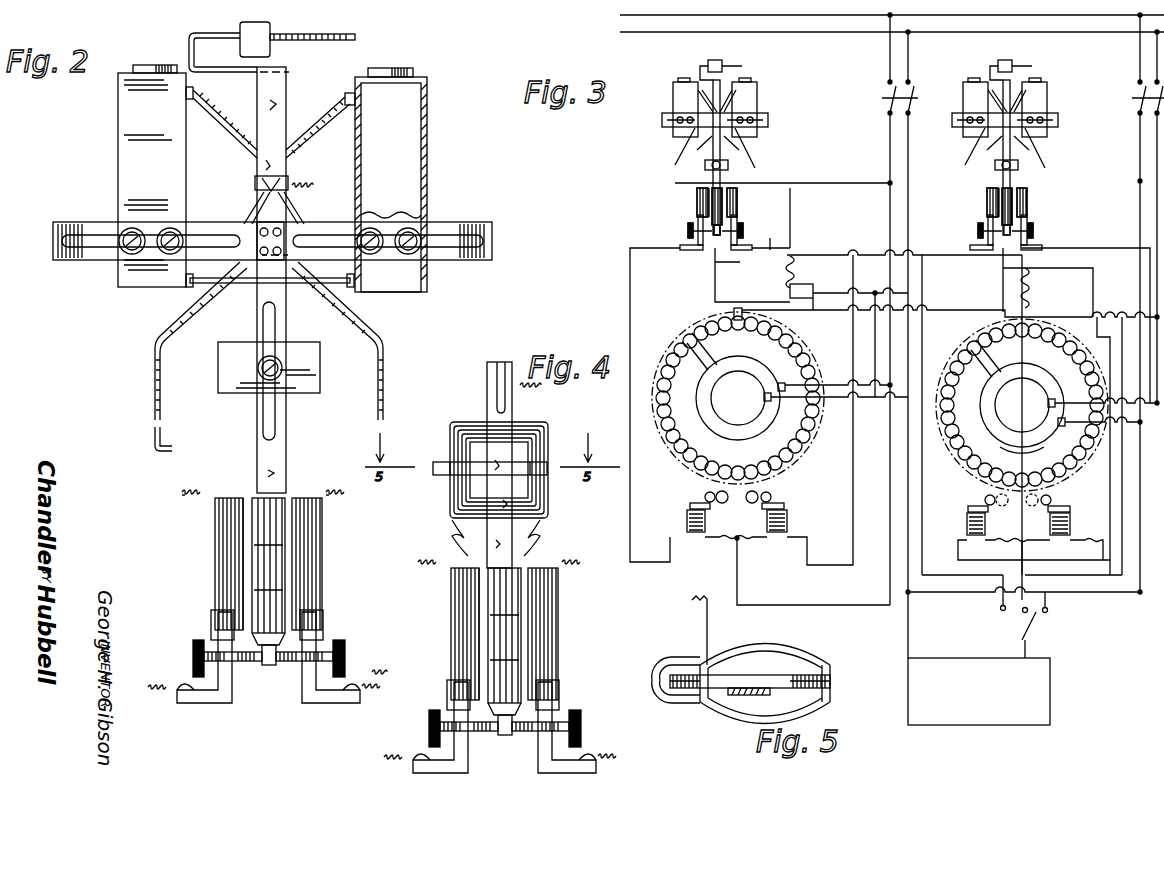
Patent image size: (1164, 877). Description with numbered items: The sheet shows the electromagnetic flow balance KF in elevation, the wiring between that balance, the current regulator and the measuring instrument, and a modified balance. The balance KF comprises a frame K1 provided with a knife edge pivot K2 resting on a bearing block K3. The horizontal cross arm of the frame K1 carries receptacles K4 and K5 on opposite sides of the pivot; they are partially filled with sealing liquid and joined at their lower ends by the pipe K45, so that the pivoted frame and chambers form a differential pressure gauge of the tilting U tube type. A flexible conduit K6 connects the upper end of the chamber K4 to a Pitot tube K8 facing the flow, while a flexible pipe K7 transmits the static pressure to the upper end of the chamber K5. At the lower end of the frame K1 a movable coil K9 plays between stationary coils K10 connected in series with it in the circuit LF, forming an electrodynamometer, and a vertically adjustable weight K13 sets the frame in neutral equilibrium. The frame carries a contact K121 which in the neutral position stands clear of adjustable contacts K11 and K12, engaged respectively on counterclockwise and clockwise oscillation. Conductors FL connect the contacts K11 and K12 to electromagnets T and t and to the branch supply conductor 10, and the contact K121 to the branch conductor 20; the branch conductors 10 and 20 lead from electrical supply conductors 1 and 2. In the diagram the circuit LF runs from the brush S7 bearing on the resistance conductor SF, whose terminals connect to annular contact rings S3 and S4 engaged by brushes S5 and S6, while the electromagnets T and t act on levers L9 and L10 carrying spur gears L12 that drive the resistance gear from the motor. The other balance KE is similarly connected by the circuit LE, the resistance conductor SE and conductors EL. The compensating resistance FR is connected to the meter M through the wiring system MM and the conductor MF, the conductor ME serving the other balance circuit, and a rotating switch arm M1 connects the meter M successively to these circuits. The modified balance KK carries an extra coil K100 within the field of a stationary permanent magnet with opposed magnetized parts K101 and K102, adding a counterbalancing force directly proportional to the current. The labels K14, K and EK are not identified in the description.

In FIG. 2, the float valve box K14 is at (271, 28).
In FIG. 2, the receptacle K5 is at (118, 166).
In FIG. 2, the receptacle K4 is at (427, 162).
In FIG. 2, the flow balance KF is at (257, 147).
In FIG. 3, the flow balance KF is at (1045, 106).
In FIG. 2, the frame K1 is at (276, 303).
In FIG. 2, the knife edge pivot K2 is at (286, 180).
In FIG. 2, the bearing block K3 is at (288, 198).
In FIG. 2, the conductor FL is at (318, 185).
In FIG. 4, the conductor FL is at (378, 656).
In FIG. 3, the conductor FL is at (1003, 270).
In FIG. 2, the circuit LF is at (182, 495).
In FIG. 3, the circuit LF is at (786, 304).
In FIG. 2, the pipe K45 is at (222, 284).
In FIG. 2, the flexible conduit K6 is at (172, 326).
In FIG. 2, the flexible pipe K7 is at (384, 327).
In FIG. 2, the Pitot tube K8 is at (170, 447).
In FIG. 2, the vertically adjustable weight K13 is at (320, 355).
In FIG. 2, the stationary coils K10 is at (215, 527).
In FIG. 4, the stationary coils K10 is at (498, 634).
In FIG. 3, the stationary coils K10 is at (697, 202).
In FIG. 2, the movable coil K9 is at (262, 558).
In FIG. 4, the movable coil K9 is at (462, 651).
In FIG. 3, the movable coil K9 is at (712, 206).
In FIG. 2, the contact K121 is at (275, 668).
In FIG. 3, the contact K121 is at (719, 240).
In FIG. 2, the adjustable contact K12 is at (206, 640).
In FIG. 4, the adjustable contact K12 is at (437, 727).
In FIG. 3, the adjustable contact K12 is at (688, 231).
In FIG. 2, the adjustable contact K11 is at (332, 640).
In FIG. 4, the adjustable contact K11 is at (567, 727).
In FIG. 3, the adjustable contact K11 is at (743, 231).
In FIG. 4, the balance frame KK is at (512, 412).
In FIG. 5, the balance frame KK is at (745, 697).
In FIG. 4, the extra coil K100 is at (548, 503).
In FIG. 5, the extra coil K100 is at (830, 683).
In FIG. 4, the permanently magnetized part K101 is at (455, 478).
In FIG. 5, the permanently magnetized part K101 is at (772, 653).
In FIG. 5, the permanently magnetized part K102 is at (800, 708).
In FIG. 3, the electrical supply conductor 1 is at (1060, 22).
In FIG. 3, the electrical supply conductor 2 is at (1112, 36).
In FIG. 3, the branch conductor 10 is at (890, 150).
In FIG. 3, the branch conductor 20 is at (908, 160).
In FIG. 3, the balance KE is at (755, 104).
In FIG. 3, the relay box K is at (752, 275).
In FIG. 3, the circuit LE is at (790, 203).
In FIG. 3, the conductor EL is at (770, 250).
In FIG. 3, the relay coil EK is at (790, 288).
In FIG. 3, the wiring system MM is at (793, 280).
In FIG. 3, the conductor ME is at (878, 255).
In FIG. 3, the resistance FR is at (1030, 285).
In FIG. 3, the conductor MF is at (1078, 262).
In FIG. 3, the resistance conductor SE is at (775, 340).
In FIG. 3, the brush S7 is at (734, 314).
In FIG. 3, the contact brush S6 is at (1068, 432).
In FIG. 3, the contact brush S5 is at (778, 404).
In FIG. 3, the electromagnet t is at (687, 522).
In FIG. 3, the electromagnet T is at (787, 522).
In FIG. 3, the resistance element SF is at (1060, 350).
In FIG. 3, the annular contact ring S3 is at (1022, 405).
In FIG. 3, the annular contact ring S4 is at (1018, 447).
In FIG. 3, the lever L10 is at (985, 500).
In FIG. 3, the spur gear L12 is at (1018, 505).
In FIG. 3, the lever L9 is at (1050, 502).
In FIG. 3, the rotating switch arm M1 is at (1032, 628).
In FIG. 3, the ammeter M is at (1088, 614).